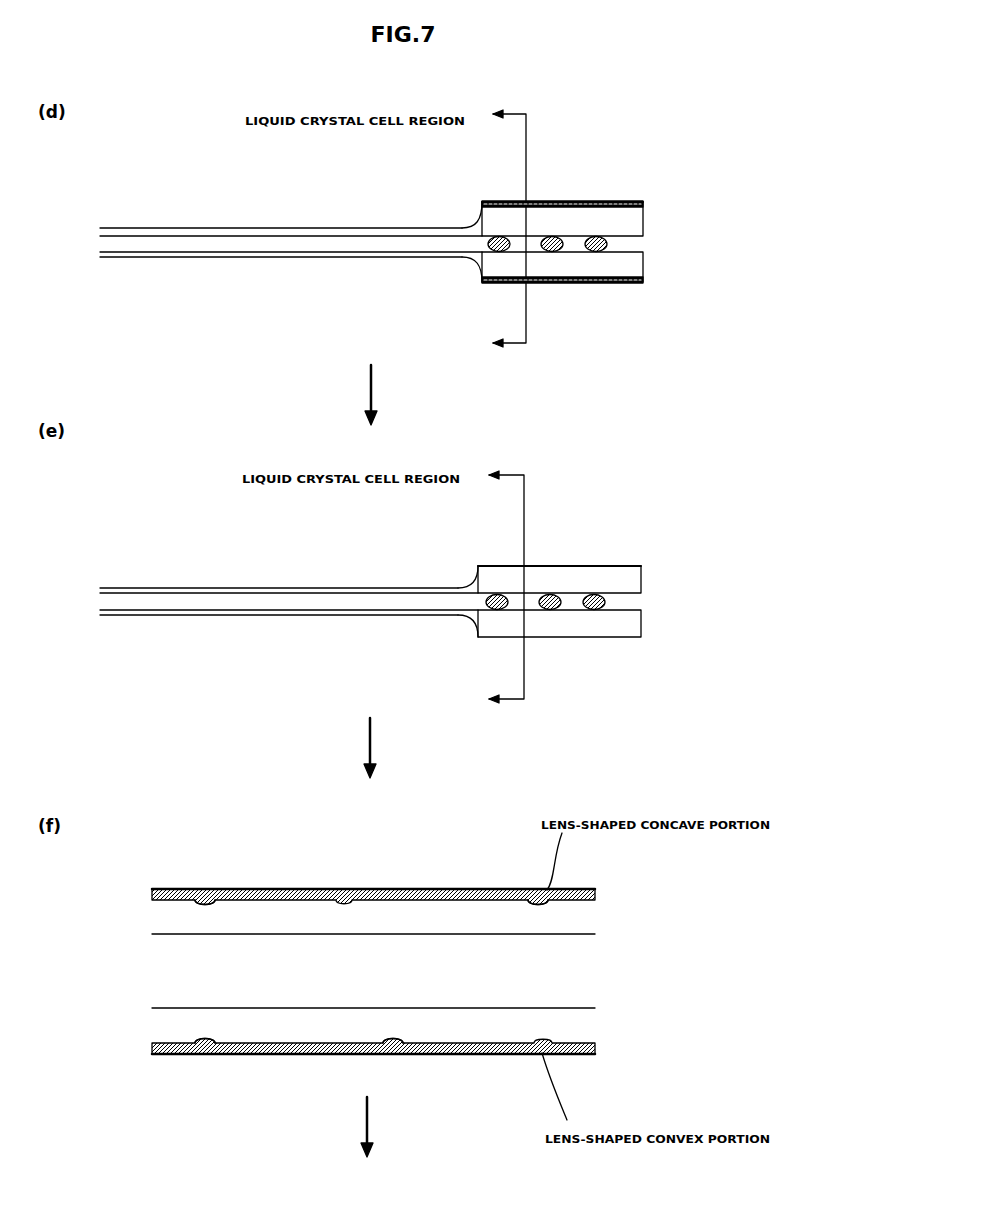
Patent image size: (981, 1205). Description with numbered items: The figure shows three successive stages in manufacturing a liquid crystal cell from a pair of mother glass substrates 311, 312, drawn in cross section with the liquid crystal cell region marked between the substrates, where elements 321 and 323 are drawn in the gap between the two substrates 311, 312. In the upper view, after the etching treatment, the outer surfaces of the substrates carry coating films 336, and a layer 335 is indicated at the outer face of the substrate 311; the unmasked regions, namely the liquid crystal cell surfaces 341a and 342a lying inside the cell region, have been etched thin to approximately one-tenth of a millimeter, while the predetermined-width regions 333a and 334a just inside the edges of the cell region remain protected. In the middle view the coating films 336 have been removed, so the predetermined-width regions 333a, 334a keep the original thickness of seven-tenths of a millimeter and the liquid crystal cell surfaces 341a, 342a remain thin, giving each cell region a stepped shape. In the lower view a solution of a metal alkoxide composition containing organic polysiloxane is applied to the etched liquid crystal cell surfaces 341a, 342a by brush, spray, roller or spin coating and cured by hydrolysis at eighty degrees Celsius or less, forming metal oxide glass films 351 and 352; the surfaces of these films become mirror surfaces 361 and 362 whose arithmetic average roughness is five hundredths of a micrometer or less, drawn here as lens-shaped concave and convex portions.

The mother glass substrate 311 is at (636, 221).
The mother glass substrate 312 is at (628, 265).
The sealing member 321 is at (496, 236).
The spacer 323 is at (596, 236).
The predetermined-width region 333a is at (484, 200).
The predetermined-width region 334a is at (484, 286).
The adhesive layer 335 is at (622, 201).
The coating film 336 is at (640, 201).
The liquid crystal cell surface 341a is at (306, 228).
The liquid crystal cell surface 342a is at (303, 258).
The metal oxide glass film 351 is at (478, 889).
The metal oxide glass film 352 is at (463, 1055).
The mirror surface 361 is at (235, 888).
The mirror surface 362 is at (230, 1055).